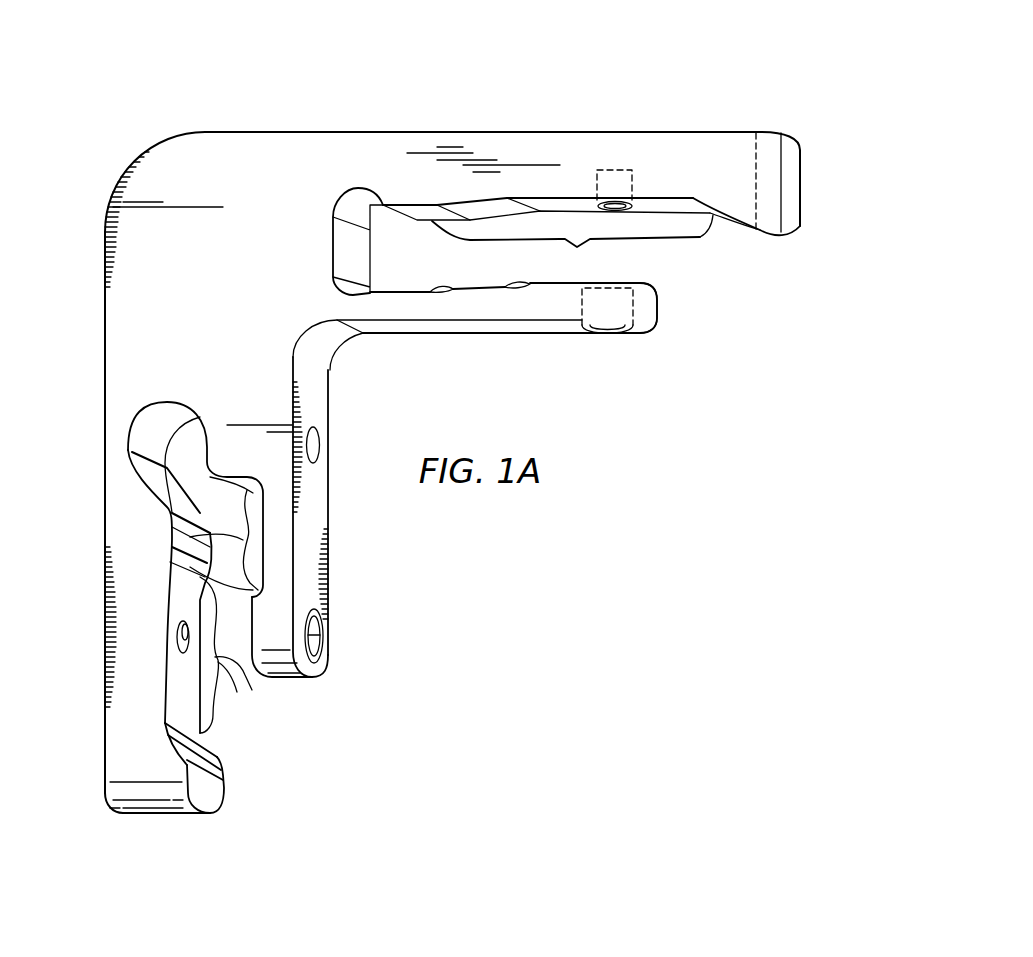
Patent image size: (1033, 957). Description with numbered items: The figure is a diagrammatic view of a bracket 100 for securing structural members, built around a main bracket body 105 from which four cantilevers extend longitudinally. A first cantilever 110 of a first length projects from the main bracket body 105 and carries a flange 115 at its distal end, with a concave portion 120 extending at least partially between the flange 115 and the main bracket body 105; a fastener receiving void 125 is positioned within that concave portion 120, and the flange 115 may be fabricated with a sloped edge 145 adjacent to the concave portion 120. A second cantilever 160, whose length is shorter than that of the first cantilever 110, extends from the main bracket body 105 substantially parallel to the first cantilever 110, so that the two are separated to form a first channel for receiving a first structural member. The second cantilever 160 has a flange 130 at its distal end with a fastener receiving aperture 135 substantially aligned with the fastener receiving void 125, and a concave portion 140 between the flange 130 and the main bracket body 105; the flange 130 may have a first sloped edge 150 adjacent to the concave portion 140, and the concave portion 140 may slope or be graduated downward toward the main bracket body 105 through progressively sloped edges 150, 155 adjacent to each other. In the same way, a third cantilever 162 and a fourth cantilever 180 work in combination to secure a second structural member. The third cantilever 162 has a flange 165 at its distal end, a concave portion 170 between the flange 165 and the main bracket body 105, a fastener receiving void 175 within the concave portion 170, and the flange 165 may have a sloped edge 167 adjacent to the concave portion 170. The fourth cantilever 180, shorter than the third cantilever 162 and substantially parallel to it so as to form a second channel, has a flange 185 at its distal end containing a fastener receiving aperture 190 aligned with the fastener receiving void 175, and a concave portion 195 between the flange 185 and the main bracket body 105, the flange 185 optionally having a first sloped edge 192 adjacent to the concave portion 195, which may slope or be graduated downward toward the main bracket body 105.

The bracket 100 is at (693, 60).
The main bracket body 105 is at (203, 131).
The first cantilever 110 is at (623, 132).
The flange 115 is at (793, 236).
The concave portion 120 is at (629, 255).
The fastener receiving void 125 is at (618, 213).
The flange 130 is at (615, 287).
The fastener receiving aperture 135 is at (612, 333).
The concave portion 140 is at (373, 280).
The sloped edge 145 is at (712, 217).
The first sloped edge 150 is at (528, 286).
The sloped edge 155 is at (430, 291).
The second cantilever 160 is at (547, 325).
The third cantilever 162 is at (104, 770).
The flange 165 is at (224, 790).
The sloped edge 167 is at (213, 760).
The concave portion 170 is at (228, 688).
The fastener receiving void 175 is at (185, 622).
The fourth cantilever 180 is at (330, 577).
The flange 185 is at (240, 659).
The fastener receiving aperture 190 is at (326, 641).
The first sloped edge 192 is at (208, 575).
The concave portion 195 is at (210, 533).